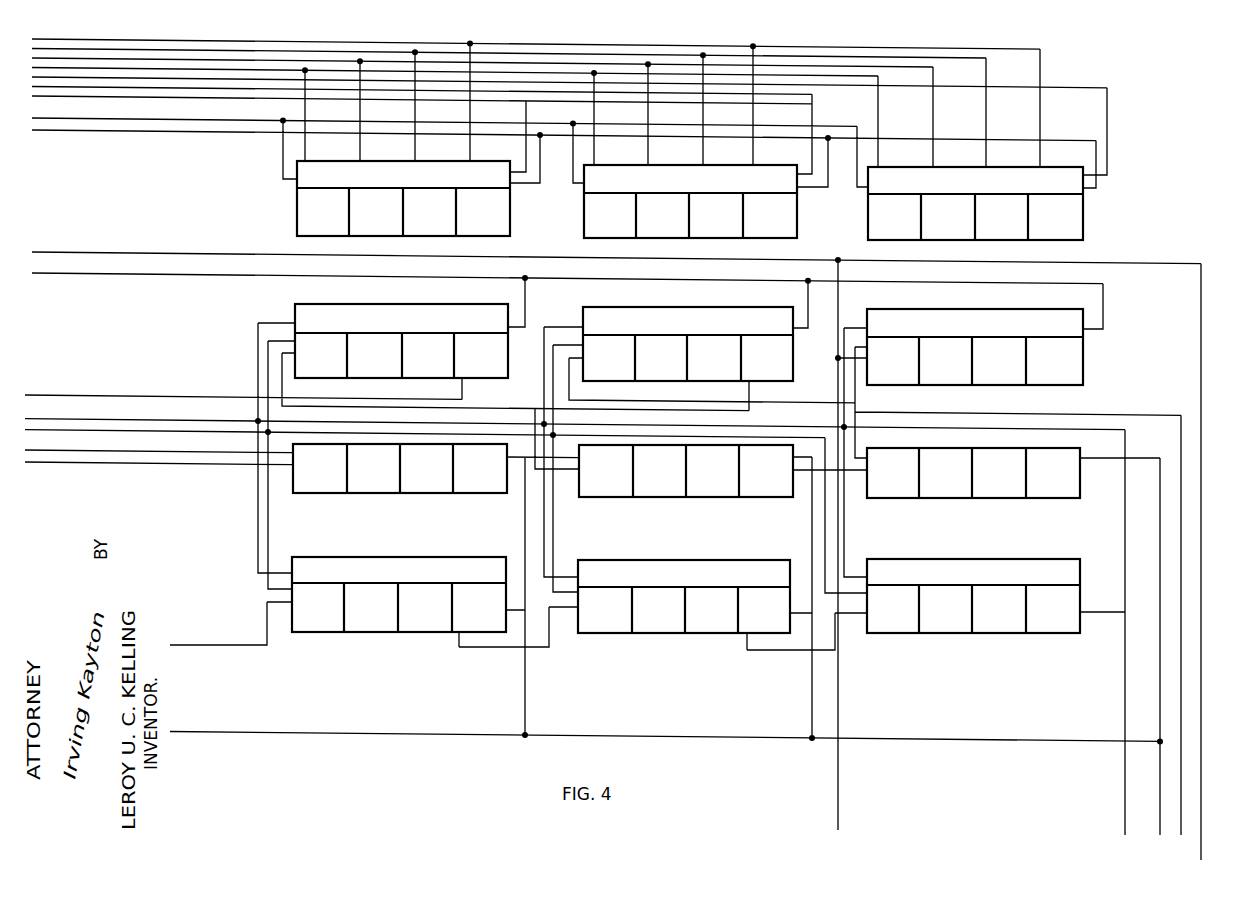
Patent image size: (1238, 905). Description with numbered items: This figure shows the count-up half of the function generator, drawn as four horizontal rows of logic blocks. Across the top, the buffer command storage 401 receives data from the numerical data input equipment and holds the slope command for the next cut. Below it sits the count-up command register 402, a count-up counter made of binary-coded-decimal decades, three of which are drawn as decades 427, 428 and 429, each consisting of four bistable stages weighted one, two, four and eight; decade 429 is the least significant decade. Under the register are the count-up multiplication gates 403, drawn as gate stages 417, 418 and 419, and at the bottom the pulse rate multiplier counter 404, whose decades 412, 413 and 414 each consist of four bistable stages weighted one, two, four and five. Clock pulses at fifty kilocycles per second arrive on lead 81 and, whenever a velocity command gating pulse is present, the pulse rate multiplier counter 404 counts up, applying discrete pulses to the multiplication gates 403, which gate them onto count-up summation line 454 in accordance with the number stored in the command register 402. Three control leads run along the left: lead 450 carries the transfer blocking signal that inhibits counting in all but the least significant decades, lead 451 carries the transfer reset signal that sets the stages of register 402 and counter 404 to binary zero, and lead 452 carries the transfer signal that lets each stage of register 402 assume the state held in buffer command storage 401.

The clock pulse lead 81 is at (65, 252).
The buffer command storage 401 is at (251, 233).
The count-up command register 402 is at (603, 557).
The count-up multiplication gates 403 is at (592, 622).
The pulse rate multiplier counter 404 is at (647, 618).
The decade of PRM counter 412 is at (324, 557).
The decade of PRM counter 413 is at (633, 560).
The decade of PRM counter 414 is at (886, 560).
The multiplication gate stage 417 is at (298, 495).
The multiplication gate stage 418 is at (624, 498).
The multiplication gate stage 419 is at (875, 499).
The decade of count-up command register 427 is at (340, 303).
The decade of count-up command register 428 is at (630, 305).
The least significant decade of count-up command register 429 is at (914, 306).
The transfer blocking lead 450 is at (82, 429).
The transfer reset lead 451 is at (73, 416).
The transfer lead 452 is at (72, 275).
The count-up summation line 454 is at (258, 737).